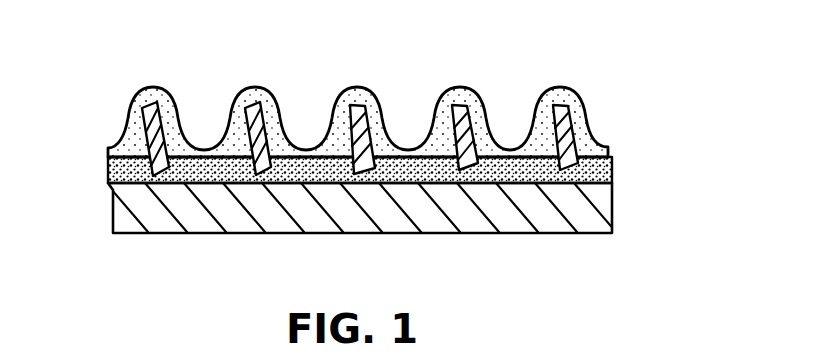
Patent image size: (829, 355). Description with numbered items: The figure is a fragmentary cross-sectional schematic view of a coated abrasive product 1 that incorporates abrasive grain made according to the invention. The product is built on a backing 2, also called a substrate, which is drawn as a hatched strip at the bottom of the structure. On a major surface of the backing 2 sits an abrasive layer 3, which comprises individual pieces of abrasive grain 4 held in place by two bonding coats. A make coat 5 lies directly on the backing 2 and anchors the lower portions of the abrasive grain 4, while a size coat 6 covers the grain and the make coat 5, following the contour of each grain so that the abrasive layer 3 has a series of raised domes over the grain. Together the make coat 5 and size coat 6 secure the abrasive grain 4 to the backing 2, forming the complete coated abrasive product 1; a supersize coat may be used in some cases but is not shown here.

The coated abrasive product 1 is at (596, 58).
The backing 2 is at (198, 222).
The abrasive layer 3 is at (626, 152).
The abrasive grain 4 is at (250, 113).
The make coat 5 is at (108, 172).
The size coat 6 is at (127, 138).